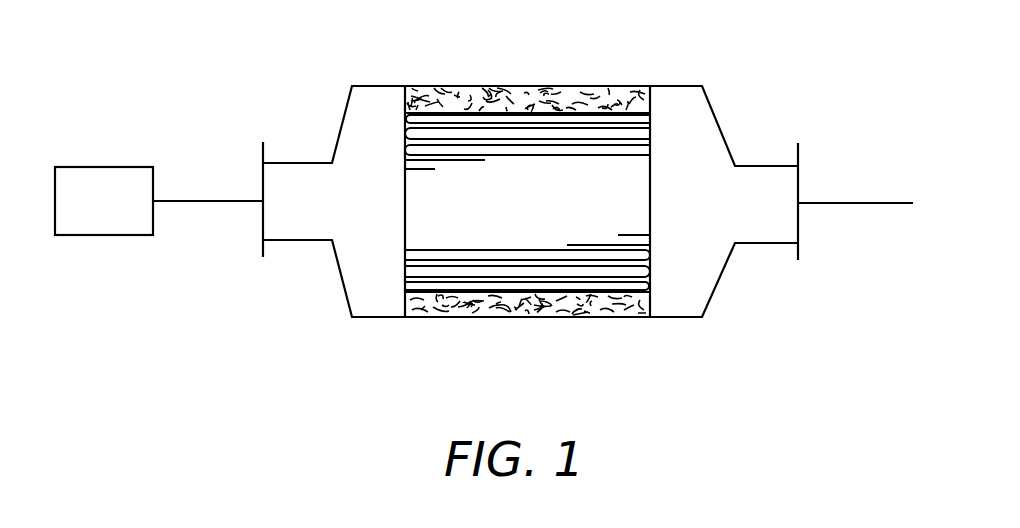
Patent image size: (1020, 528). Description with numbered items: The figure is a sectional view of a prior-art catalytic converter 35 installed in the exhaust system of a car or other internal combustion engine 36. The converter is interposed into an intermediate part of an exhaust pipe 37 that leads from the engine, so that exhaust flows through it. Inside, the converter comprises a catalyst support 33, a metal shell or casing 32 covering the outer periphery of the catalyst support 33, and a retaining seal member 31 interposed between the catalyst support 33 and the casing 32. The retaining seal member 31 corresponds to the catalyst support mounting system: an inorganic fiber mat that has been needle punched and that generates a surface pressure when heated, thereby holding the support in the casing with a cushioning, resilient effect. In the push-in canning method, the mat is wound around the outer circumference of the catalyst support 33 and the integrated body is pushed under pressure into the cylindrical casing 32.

The retaining seal member 31 is at (603, 86).
The metal shell (casing) 32 is at (603, 317).
The catalyst support 33 is at (463, 182).
The catalytic converter 35 is at (282, 301).
The internal combustion engine 36 is at (98, 235).
The exhaust pipe 37 is at (203, 201).